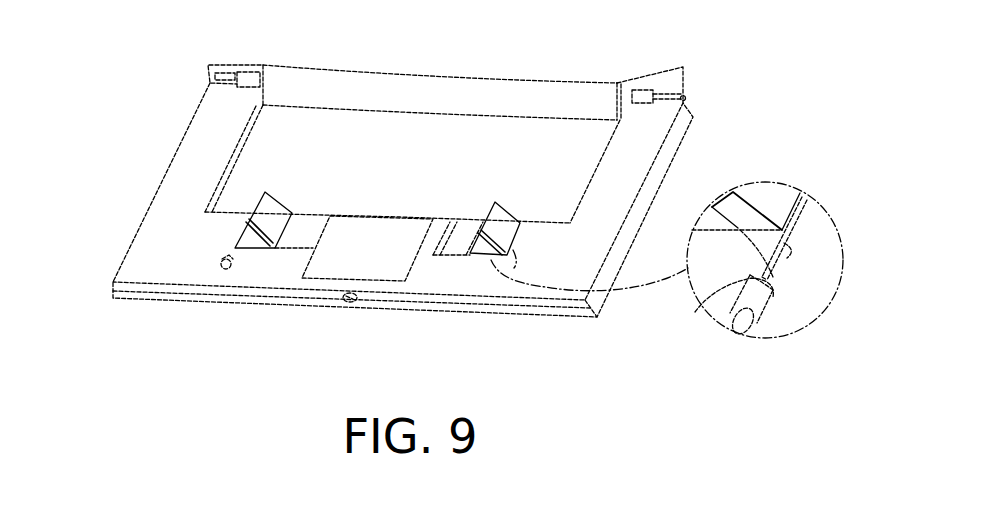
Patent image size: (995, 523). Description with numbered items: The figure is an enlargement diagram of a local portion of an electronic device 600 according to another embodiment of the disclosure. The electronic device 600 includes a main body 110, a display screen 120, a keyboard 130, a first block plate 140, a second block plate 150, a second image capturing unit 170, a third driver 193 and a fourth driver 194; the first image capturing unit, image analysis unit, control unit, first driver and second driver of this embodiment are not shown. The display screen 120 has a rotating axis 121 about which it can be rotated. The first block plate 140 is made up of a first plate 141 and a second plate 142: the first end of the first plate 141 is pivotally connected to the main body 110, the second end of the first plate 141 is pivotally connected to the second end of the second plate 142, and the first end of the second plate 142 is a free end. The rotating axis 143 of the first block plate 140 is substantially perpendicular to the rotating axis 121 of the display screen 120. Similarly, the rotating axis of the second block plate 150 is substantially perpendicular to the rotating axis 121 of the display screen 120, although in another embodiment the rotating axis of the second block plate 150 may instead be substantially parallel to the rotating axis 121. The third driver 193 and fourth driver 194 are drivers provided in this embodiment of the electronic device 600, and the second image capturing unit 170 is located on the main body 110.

The electronic device 600 is at (127, 52).
The main body 110 is at (665, 164).
The keyboard 130 is at (563, 102).
The display screen 120 is at (688, 88).
The rotating axis 121 is at (667, 90).
The second block plate 150 is at (262, 250).
The fourth driver 194 is at (232, 266).
The second image capturing unit 170 is at (348, 298).
The first block plate 140 is at (428, 352).
The second plate 142 is at (477, 228).
The first plate 141 is at (503, 231).
The rotating axis 143 is at (808, 207).
The third driver 193 is at (720, 306).